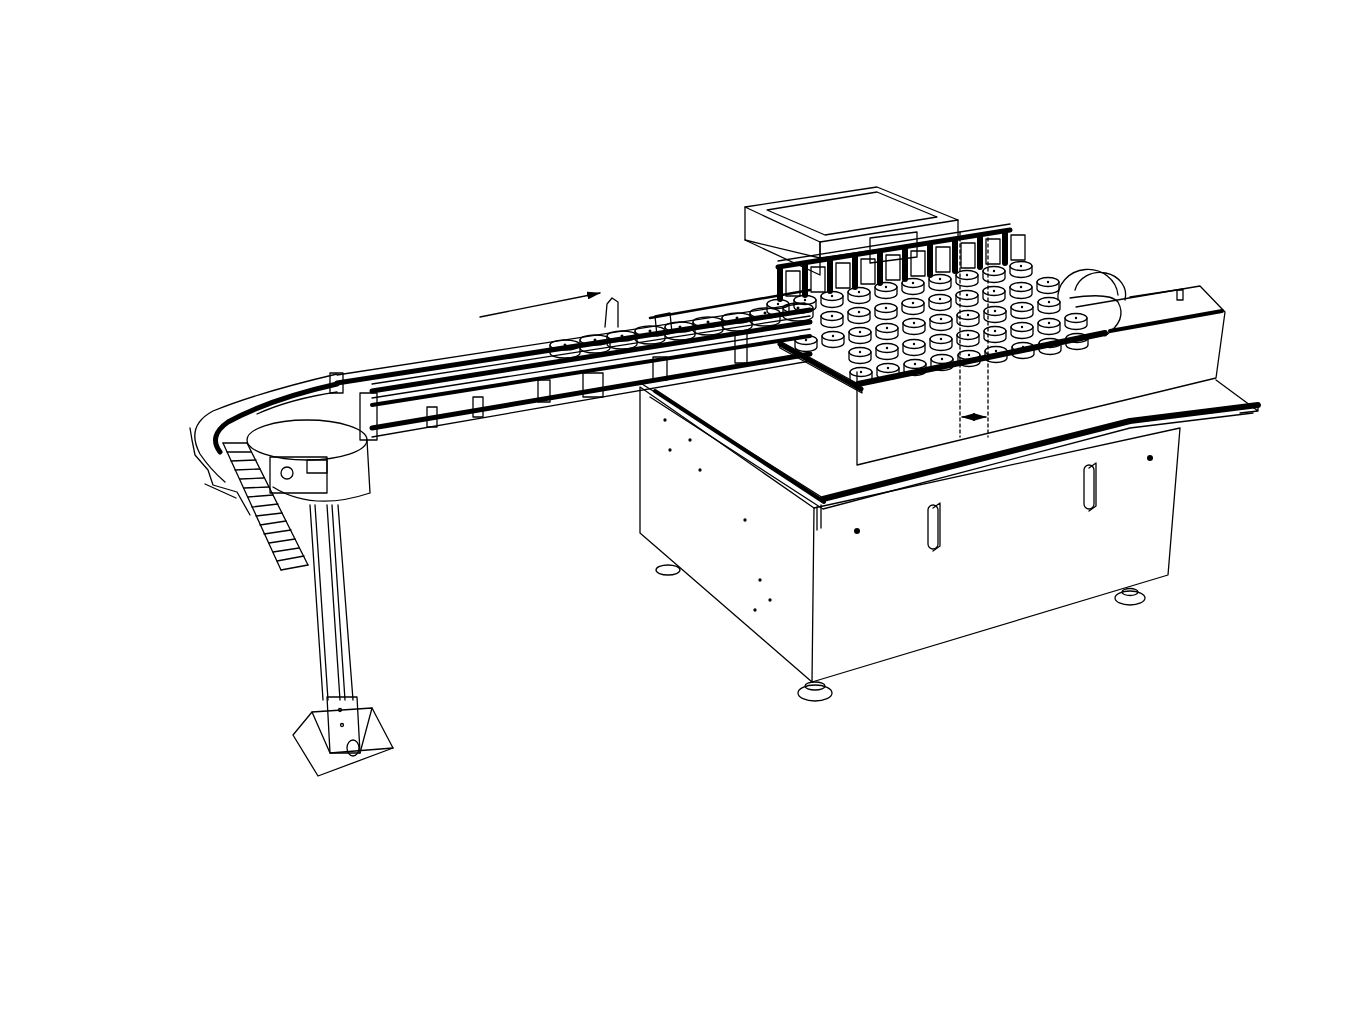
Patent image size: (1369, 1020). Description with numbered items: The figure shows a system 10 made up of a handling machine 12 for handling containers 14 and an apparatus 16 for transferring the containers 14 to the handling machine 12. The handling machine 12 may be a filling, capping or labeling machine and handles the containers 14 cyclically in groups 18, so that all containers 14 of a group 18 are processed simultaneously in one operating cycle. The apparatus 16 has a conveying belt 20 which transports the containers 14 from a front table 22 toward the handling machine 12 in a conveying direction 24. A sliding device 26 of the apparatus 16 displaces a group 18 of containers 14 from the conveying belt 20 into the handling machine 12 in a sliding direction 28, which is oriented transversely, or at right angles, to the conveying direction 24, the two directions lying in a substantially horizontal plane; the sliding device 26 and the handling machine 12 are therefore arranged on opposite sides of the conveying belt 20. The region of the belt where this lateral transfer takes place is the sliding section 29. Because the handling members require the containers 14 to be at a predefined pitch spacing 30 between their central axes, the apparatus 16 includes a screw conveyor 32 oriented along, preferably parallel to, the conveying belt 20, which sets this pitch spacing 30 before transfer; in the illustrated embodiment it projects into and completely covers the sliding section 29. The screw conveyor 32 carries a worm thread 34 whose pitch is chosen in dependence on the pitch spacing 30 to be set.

The system 10 is at (447, 187).
The handling machine 12 is at (1193, 272).
The containers 14 is at (820, 343).
The apparatus 16 is at (1022, 183).
The group 18 is at (1060, 330).
The conveying belt 20 is at (450, 357).
The front table 22 is at (257, 350).
The conveying direction 24 is at (525, 305).
The sliding device 26 is at (733, 237).
The sliding direction 28 is at (930, 228).
The sliding section 29 is at (733, 193).
The pitch spacing 30 is at (973, 427).
The screw conveyor 32 is at (732, 303).
The worm thread 34 is at (658, 315).